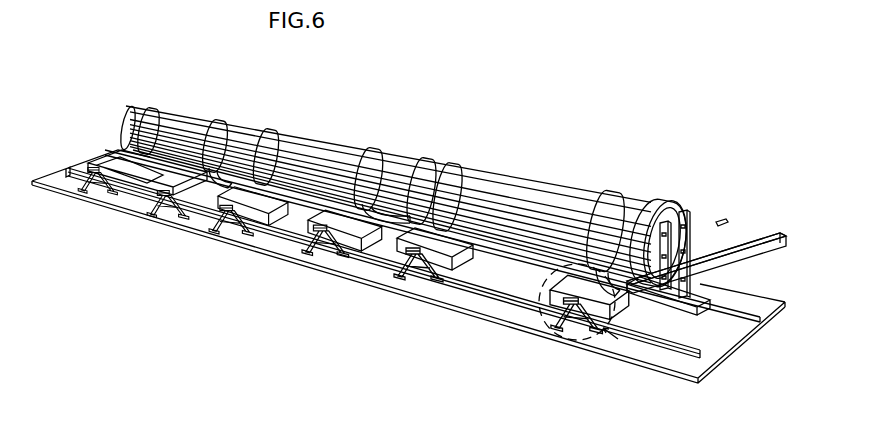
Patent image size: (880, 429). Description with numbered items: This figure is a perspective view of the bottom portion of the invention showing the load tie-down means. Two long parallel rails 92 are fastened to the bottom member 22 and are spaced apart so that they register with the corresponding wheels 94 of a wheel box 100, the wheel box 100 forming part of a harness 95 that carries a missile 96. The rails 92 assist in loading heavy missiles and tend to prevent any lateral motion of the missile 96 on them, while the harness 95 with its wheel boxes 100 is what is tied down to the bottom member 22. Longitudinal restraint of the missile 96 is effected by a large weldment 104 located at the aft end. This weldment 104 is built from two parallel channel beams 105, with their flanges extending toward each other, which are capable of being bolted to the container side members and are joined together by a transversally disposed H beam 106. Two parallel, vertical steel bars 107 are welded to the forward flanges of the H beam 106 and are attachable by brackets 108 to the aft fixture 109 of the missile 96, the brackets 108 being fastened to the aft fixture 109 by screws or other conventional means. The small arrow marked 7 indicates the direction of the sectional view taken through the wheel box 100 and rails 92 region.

The rails 92 is at (757, 312).
The wheels 94 is at (438, 278).
The harness 95 is at (621, 201).
The missile 96 is at (523, 181).
The wheel box 100 is at (476, 252).
The weldment 104 is at (769, 235).
The channel beams 105 is at (666, 301).
The H beam 106 is at (702, 258).
The vertical steel bars 107 is at (720, 224).
The brackets 108 is at (674, 230).
The aft fixture 109 is at (679, 211).
The bottom member 22 is at (546, 334).
The section view indicator 7 is at (612, 337).